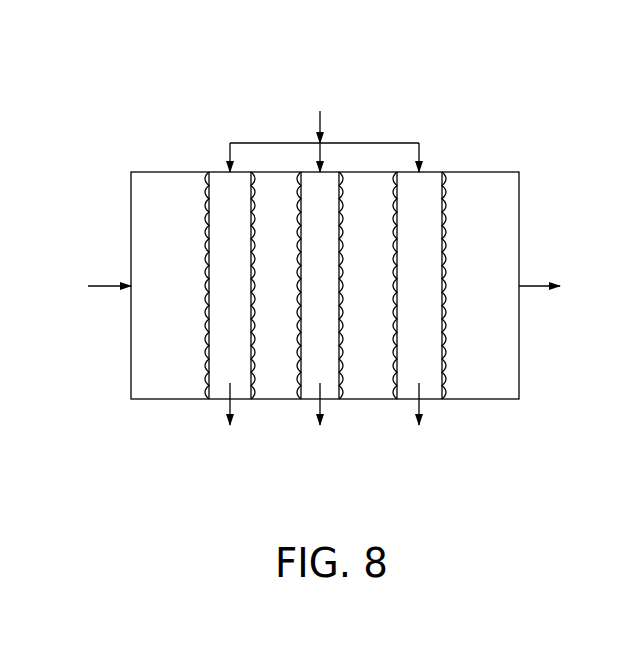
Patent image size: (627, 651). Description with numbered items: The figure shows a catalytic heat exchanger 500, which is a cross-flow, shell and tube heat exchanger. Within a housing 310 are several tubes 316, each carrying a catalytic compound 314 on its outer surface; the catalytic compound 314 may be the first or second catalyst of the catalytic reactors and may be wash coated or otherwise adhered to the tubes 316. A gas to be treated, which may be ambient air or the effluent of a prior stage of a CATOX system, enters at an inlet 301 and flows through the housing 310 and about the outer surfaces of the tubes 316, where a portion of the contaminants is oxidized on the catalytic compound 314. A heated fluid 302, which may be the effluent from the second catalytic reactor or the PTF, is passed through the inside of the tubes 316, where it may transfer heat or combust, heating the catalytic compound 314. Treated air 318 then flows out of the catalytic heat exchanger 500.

The catalytic heat exchanger 500 is at (338, 241).
The housing 310 is at (471, 172).
The catalytic compound 314 is at (205, 336).
The tubes 316 is at (328, 278).
The heated fluid 302 is at (468, 425).
The inlet 301 is at (103, 284).
The treated air 318 is at (534, 284).